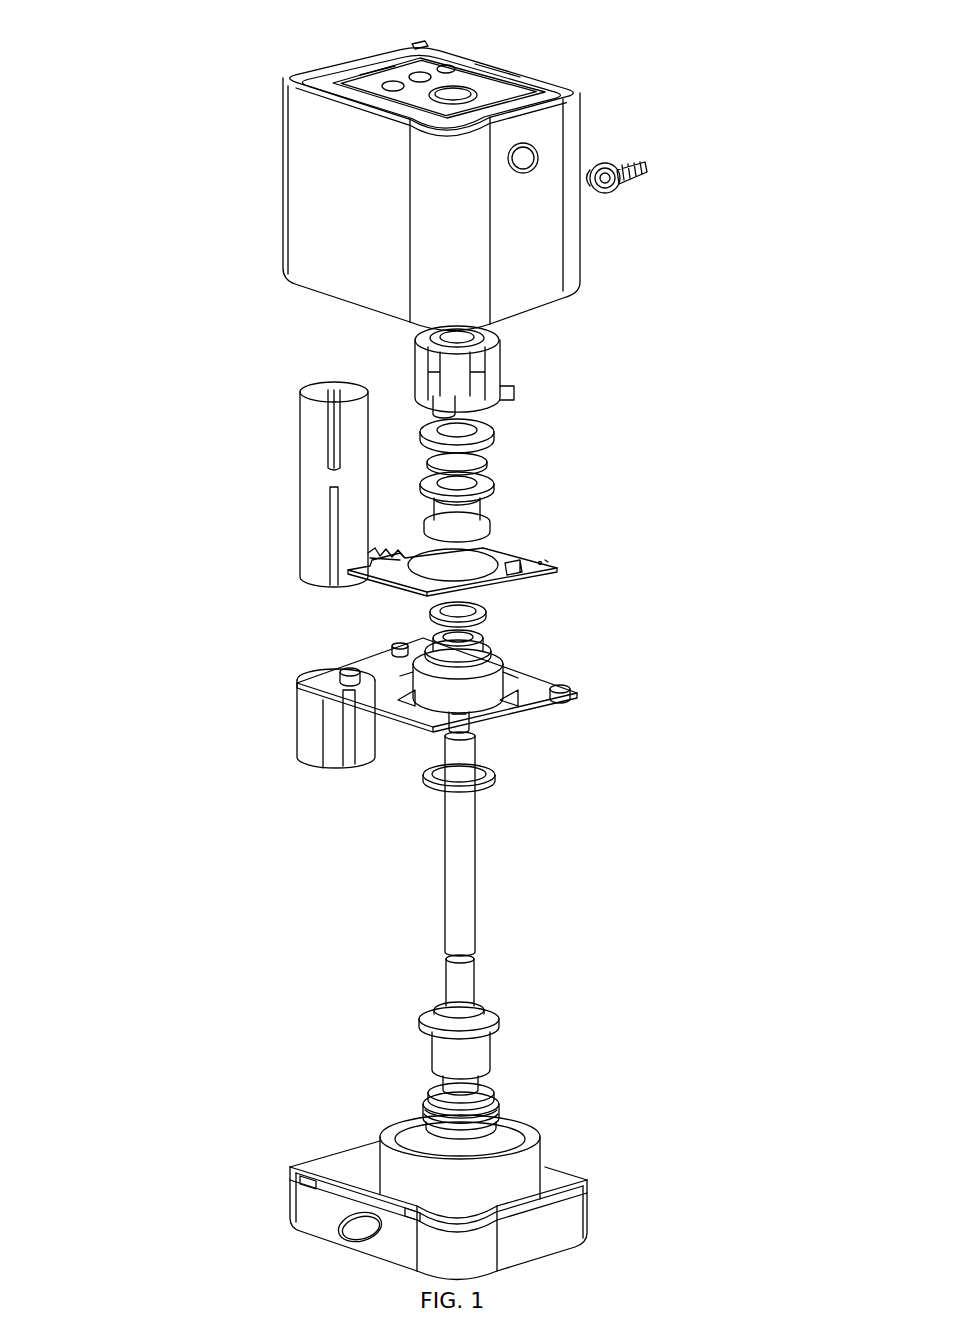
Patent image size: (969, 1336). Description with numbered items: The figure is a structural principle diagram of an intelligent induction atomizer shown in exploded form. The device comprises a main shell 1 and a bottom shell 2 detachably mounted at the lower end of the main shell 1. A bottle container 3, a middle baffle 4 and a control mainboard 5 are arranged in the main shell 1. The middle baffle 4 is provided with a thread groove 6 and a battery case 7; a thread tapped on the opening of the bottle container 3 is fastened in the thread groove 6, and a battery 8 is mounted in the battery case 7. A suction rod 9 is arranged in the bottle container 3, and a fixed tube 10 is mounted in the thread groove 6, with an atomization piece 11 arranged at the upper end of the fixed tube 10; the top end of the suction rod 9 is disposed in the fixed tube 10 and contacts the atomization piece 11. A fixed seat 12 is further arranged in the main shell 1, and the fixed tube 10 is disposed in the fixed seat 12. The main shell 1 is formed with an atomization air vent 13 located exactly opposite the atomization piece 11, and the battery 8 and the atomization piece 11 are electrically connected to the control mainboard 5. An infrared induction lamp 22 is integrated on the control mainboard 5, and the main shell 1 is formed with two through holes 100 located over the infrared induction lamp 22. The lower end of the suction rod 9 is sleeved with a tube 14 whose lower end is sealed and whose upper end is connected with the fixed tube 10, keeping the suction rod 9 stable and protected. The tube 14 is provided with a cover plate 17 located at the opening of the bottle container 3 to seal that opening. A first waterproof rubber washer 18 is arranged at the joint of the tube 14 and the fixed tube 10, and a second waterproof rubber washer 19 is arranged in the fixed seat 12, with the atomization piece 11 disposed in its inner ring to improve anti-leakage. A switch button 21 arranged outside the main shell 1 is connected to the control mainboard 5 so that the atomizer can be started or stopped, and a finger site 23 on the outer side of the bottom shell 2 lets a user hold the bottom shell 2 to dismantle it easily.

The through holes 100 is at (405, 93).
The main shell 1 is at (342, 266).
The atomization air vent 13 is at (545, 78).
The switch button 21 is at (645, 165).
The fixed seat 12 is at (500, 385).
The second waterproof rubber washer 19 is at (497, 437).
The atomization piece 11 is at (487, 460).
The fixed tube 10 is at (485, 513).
The battery 8 is at (301, 497).
The control mainboard 5 is at (555, 566).
The infrared induction lamp 22 is at (370, 552).
The first waterproof rubber washer 18 is at (432, 617).
The middle baffle 4 is at (490, 722).
The thread groove 6 is at (487, 690).
The battery case 7 is at (297, 735).
The suction rod 9 is at (477, 868).
The cover plate 17 is at (495, 1032).
The tube 14 is at (485, 1072).
The bottle container 3 is at (505, 1177).
The bottom shell 2 is at (588, 1242).
The finger site 23 is at (360, 1212).